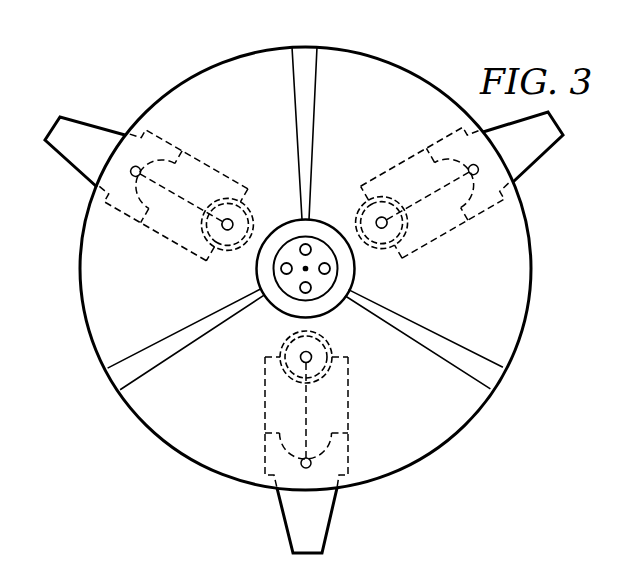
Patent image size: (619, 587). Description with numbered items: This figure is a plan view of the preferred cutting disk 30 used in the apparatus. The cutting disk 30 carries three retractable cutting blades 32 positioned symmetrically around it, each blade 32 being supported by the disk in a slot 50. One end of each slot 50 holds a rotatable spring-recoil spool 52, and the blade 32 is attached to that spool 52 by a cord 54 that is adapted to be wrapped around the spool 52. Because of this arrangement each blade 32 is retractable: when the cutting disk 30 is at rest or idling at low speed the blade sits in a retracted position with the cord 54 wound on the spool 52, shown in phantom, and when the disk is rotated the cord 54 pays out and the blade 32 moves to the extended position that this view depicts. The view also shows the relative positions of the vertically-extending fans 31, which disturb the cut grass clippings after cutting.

The cutting disk 30 is at (182, 99).
The vertically-extending fans 31 is at (305, 103).
The retractable cutting blade 32 is at (90, 124).
The slot 50 is at (265, 400).
The rotatable spring-recoil spool 52 is at (328, 342).
The cord 54 is at (310, 397).